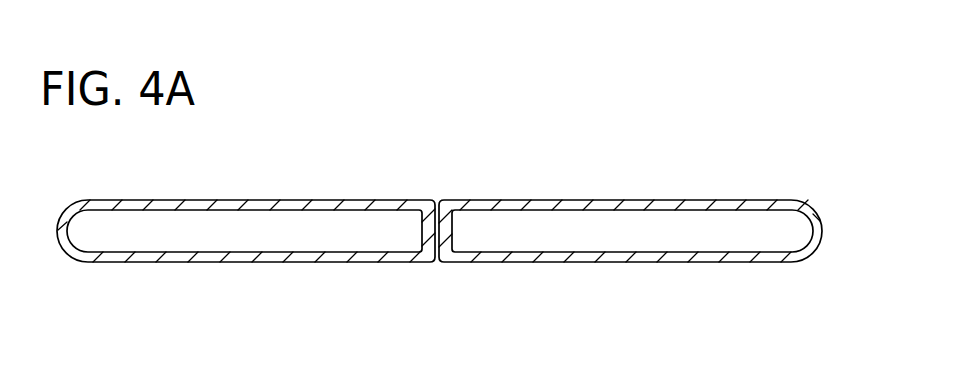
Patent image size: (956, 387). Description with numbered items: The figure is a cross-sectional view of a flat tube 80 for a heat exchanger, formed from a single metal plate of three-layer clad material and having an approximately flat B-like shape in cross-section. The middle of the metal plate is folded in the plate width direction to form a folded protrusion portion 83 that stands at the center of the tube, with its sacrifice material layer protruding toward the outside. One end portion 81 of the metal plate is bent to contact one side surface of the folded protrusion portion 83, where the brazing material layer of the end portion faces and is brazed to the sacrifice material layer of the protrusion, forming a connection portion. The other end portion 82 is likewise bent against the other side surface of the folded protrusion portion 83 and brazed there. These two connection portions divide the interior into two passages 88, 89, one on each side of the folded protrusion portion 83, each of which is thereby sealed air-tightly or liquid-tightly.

The flat tube 80 is at (599, 176).
The one end portion 81 is at (462, 229).
The other end portion 82 is at (421, 229).
The folded protrusion portion 83 is at (437, 212).
The passage 88 is at (630, 255).
The passage 89 is at (246, 255).